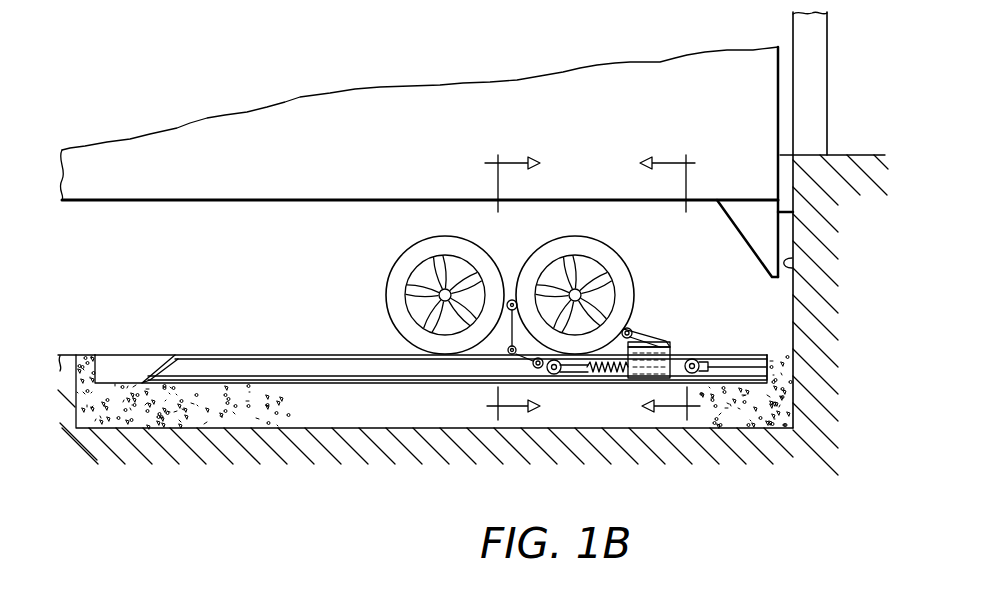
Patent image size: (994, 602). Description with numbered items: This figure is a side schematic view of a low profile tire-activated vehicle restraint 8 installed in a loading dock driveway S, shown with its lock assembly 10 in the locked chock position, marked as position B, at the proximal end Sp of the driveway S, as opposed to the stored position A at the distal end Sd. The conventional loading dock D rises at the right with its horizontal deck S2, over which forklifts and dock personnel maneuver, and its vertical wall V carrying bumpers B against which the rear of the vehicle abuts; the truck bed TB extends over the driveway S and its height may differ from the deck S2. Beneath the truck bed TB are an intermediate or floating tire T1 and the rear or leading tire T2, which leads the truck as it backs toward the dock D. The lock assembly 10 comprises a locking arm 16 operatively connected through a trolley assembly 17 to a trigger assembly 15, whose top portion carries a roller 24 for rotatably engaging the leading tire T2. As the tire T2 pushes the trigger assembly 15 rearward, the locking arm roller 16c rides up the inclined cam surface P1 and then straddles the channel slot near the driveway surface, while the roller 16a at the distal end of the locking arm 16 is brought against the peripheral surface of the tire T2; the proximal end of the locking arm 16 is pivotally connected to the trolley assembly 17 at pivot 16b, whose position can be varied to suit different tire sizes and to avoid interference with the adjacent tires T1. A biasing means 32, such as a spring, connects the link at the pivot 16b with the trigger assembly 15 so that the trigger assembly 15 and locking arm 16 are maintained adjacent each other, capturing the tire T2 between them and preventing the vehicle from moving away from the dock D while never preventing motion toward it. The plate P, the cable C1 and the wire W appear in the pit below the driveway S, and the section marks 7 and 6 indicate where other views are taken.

The loading dock D is at (800, 40).
The deck S2 is at (868, 155).
The bumpers B is at (783, 199).
The vertical wall V is at (793, 265).
The truck bed TB is at (172, 200).
The intermediate tires T1 is at (413, 253).
The rear tire T2 is at (614, 258).
The locking arm 16 is at (506, 318).
The roller 16a is at (513, 299).
The pivot 16b is at (537, 368).
The roller 16c is at (457, 352).
The roller 24 is at (630, 328).
The lock assembly 10 is at (667, 302).
The trigger assembly 15 is at (657, 332).
The cable C1 is at (748, 362).
The driveway S is at (70, 355).
The inclined cam surface P1 is at (148, 376).
The cover plate P is at (165, 355).
The distal end of the driveway Sd is at (108, 465).
The retracted position A is at (232, 505).
The vehicle restraint 8 is at (386, 408).
The wire W is at (578, 370).
The trolley assembly 17 is at (610, 373).
The biasing means 32 is at (688, 378).
The proximal end of the driveway Sp is at (778, 463).
The section line 7- 7 is at (523, 290).
The section line 6- 6 is at (656, 290).